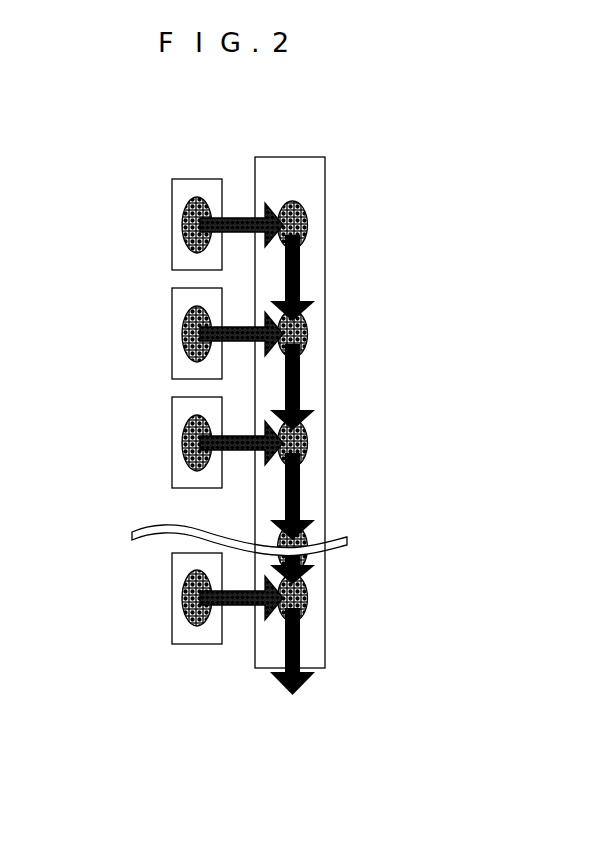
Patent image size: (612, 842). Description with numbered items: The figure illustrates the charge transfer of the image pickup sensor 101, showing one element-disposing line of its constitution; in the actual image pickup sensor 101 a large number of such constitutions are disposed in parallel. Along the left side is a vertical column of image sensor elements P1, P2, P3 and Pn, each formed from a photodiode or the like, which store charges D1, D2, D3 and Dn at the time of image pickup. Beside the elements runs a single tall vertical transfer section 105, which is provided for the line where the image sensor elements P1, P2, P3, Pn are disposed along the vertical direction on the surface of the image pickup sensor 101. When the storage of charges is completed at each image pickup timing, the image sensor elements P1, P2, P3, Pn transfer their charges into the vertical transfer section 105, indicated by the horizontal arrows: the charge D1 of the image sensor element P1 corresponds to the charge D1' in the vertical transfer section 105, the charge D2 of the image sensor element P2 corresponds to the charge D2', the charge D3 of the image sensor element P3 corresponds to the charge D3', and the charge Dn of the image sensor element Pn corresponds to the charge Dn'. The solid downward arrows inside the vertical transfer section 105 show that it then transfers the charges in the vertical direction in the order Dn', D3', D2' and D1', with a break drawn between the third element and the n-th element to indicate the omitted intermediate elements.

The image pickup sensor 101 is at (417, 122).
The vertical transfer section 105 is at (308, 174).
The charge D1 is at (176, 219).
The charge D2 is at (176, 328).
The charge D3 is at (176, 437).
The charge Dn is at (176, 593).
The charge D1' is at (356, 223).
The charge D2' is at (356, 333).
The charge D3' is at (356, 442).
The charge Dn' is at (356, 597).
The image sensor element P1 is at (178, 248).
The image sensor element P2 is at (178, 358).
The image sensor element P3 is at (178, 466).
The image sensor element Pn is at (178, 621).